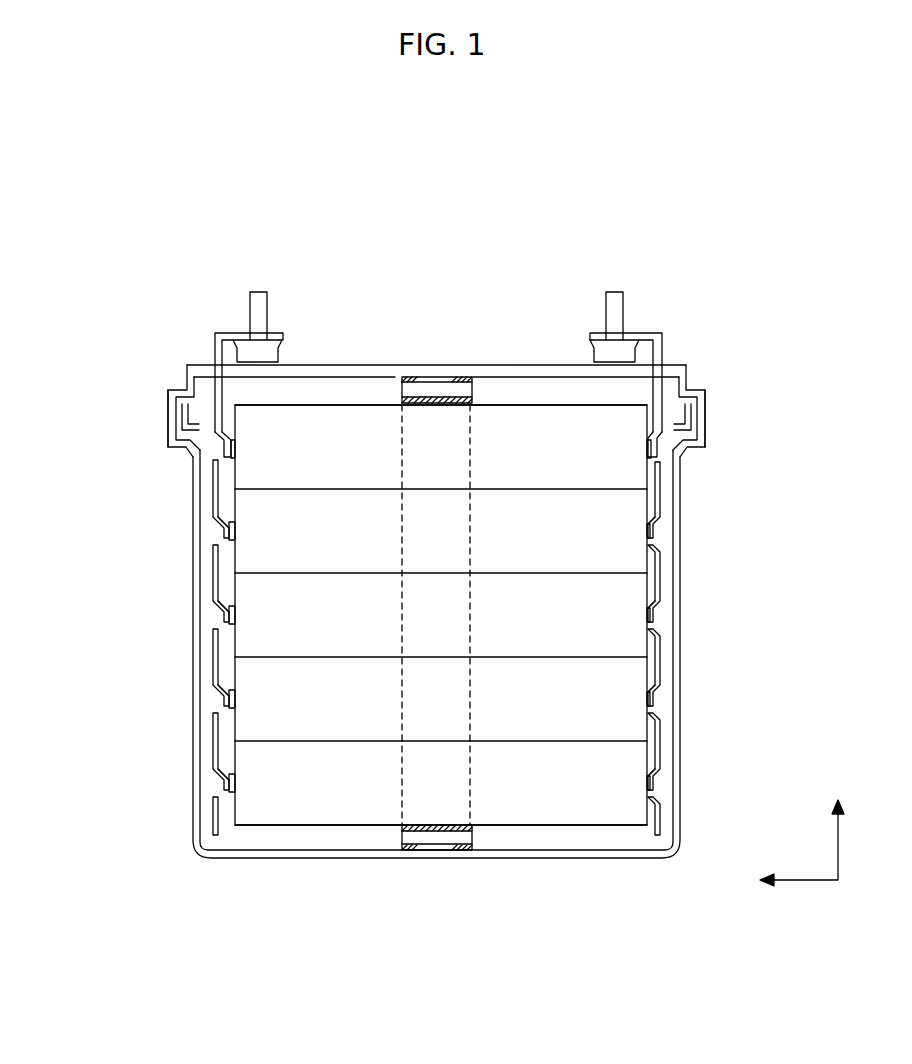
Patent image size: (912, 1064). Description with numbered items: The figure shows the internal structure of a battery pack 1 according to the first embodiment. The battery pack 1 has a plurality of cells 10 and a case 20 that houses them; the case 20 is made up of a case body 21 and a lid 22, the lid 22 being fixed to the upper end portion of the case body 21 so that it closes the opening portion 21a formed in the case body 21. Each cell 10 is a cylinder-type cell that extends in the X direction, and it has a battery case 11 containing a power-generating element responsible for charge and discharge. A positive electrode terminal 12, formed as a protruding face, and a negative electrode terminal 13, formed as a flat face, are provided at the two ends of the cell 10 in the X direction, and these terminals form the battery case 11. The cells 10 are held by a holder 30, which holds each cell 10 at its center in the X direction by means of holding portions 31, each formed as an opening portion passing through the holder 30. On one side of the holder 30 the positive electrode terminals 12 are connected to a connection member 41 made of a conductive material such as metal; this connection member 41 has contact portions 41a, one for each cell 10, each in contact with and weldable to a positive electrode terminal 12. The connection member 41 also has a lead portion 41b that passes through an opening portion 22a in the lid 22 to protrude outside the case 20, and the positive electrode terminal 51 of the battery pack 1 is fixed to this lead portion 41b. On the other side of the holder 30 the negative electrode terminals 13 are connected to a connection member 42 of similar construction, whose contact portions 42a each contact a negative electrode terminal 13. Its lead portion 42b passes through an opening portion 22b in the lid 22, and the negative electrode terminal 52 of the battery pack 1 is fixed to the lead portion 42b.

The battery pack 1 is at (422, 262).
The cell 10 is at (352, 468).
The battery case 11 is at (340, 395).
The positive electrode terminal 12 is at (228, 537).
The negative electrode terminal 13 is at (653, 531).
The case 20 is at (75, 392).
The case body 21 is at (190, 478).
The opening portion 21a is at (178, 398).
The lid 22 is at (175, 415).
The opening portion 22a is at (205, 370).
The opening portion 22b is at (682, 370).
The holder 30 is at (474, 388).
The holding portion 31 is at (399, 393).
The connection member 41 is at (202, 644).
The contact portion 41a is at (222, 616).
The lead portion 41b is at (215, 345).
The connection member 42 is at (672, 647).
The contact portion 42a is at (655, 616).
The lead portion 42b is at (662, 345).
The positive electrode terminal 51 is at (260, 325).
The negative electrode terminal 52 is at (620, 325).